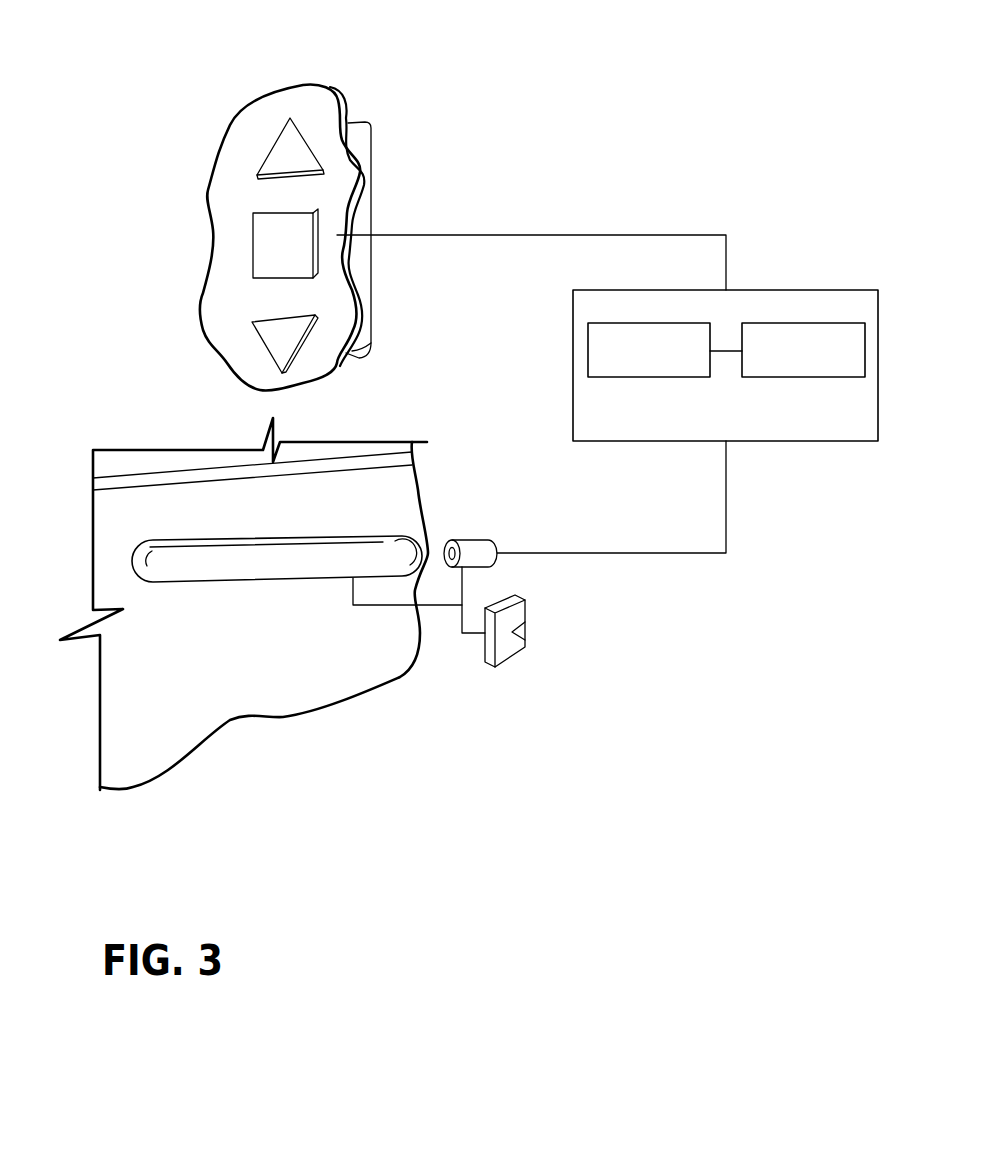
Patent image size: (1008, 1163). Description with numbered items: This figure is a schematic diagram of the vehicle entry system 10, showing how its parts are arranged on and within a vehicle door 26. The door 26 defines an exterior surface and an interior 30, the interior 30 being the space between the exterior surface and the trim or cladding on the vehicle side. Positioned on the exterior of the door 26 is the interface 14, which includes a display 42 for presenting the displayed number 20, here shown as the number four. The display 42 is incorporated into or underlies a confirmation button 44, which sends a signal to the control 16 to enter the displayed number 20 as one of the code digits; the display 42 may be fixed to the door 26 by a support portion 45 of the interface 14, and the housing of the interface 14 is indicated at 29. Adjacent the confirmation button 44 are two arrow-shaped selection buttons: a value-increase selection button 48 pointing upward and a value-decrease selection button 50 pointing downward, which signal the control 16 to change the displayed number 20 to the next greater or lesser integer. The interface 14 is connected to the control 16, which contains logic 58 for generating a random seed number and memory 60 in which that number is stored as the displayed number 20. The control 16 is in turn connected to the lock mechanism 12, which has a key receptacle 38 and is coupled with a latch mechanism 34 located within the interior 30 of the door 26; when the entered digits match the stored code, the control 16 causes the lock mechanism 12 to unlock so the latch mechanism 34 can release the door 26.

The vehicle entry system 10 is at (597, 100).
The lock mechanism 12 is at (483, 546).
The interface 14 is at (238, 245).
The control 16 is at (786, 290).
The displayed number 20 is at (267, 250).
The door 26 is at (328, 500).
The housing outer surface 29 is at (320, 103).
The interior 30 is at (250, 567).
The latch mechanism 34 is at (515, 613).
The key receptacle 38 is at (443, 547).
The display 42 is at (303, 253).
The confirmation button 44 is at (307, 213).
The support portion 45 is at (363, 212).
The value-increase selection button 48 is at (283, 152).
The value-decrease selection button 50 is at (278, 332).
The logic 58 is at (645, 382).
The memory 60 is at (795, 378).